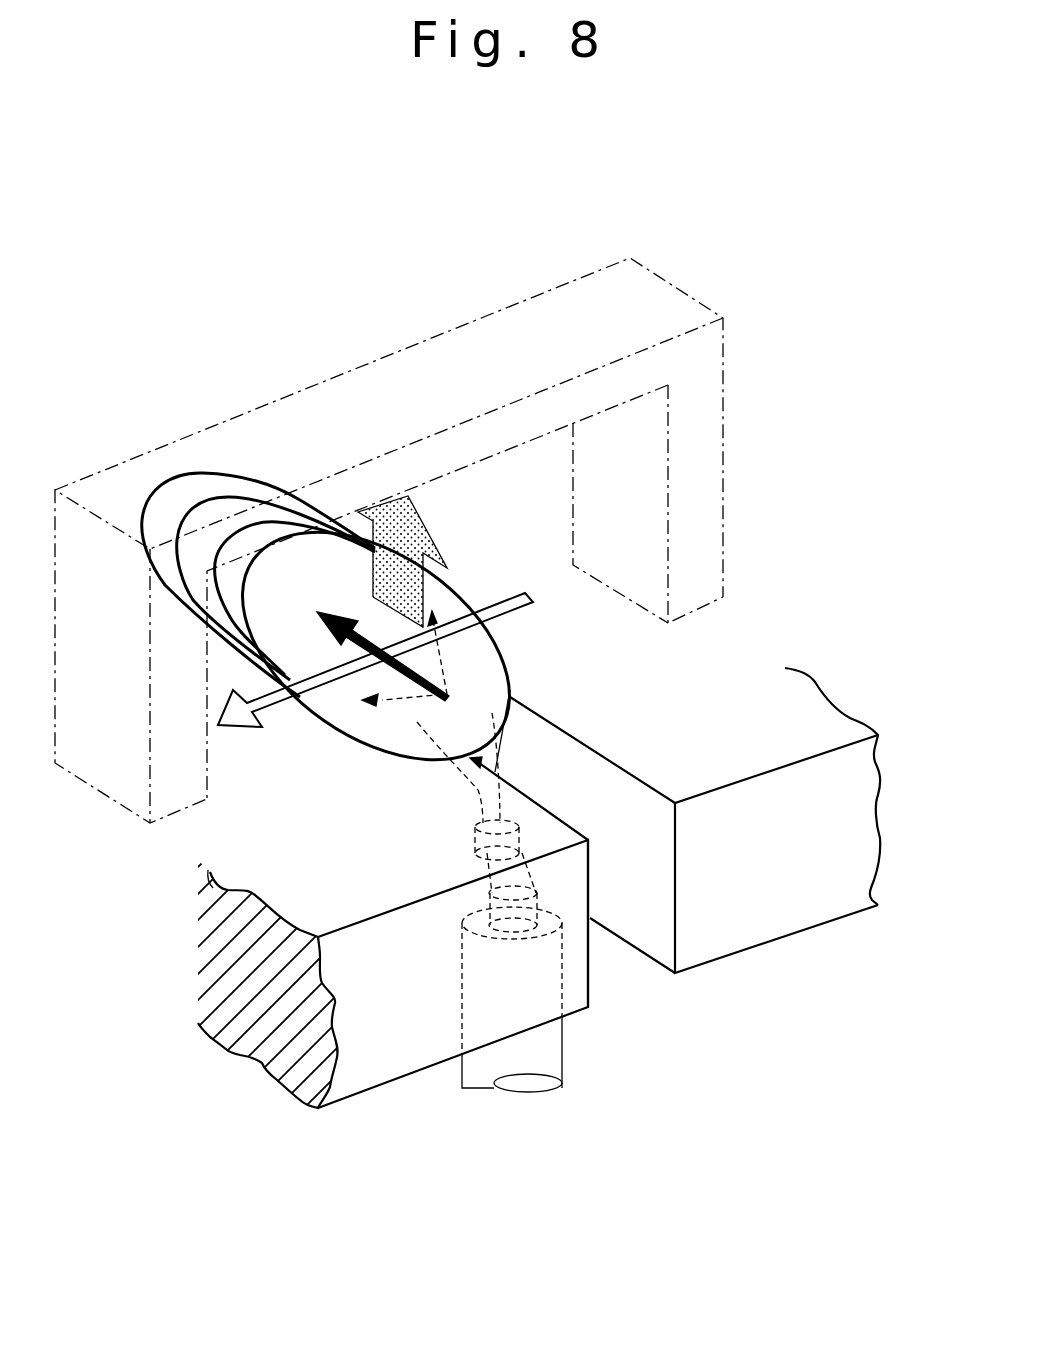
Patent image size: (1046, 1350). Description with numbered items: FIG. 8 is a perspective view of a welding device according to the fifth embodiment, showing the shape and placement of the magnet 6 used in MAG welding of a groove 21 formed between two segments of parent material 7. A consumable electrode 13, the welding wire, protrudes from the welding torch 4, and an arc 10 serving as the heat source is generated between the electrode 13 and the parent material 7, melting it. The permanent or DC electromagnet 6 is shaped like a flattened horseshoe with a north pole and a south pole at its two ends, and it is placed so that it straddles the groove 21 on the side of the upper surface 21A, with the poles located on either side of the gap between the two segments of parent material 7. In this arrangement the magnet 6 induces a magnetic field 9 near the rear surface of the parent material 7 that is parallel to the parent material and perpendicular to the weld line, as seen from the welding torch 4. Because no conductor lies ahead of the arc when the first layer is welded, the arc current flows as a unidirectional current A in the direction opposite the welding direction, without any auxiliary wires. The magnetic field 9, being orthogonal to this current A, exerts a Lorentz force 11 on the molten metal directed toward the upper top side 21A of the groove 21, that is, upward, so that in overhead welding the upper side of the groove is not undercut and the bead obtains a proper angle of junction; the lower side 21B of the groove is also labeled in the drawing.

The welding torch 4 is at (475, 842).
The permanent or DC electromagnet 6 is at (473, 375).
The parent material 7 is at (440, 954).
The magnetic field 9 is at (514, 620).
The arc (heat source) 10 is at (473, 732).
The Lorentz force 11 is at (383, 518).
The consumable electrode 13 is at (482, 822).
The groove 21 is at (642, 910).
The upper top side of the groove 21A is at (818, 893).
The housing block 21B is at (340, 943).
The unidirectional current A is at (390, 660).